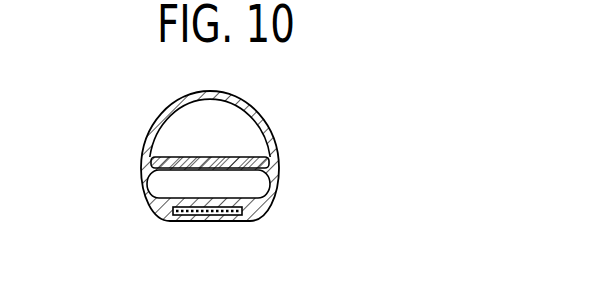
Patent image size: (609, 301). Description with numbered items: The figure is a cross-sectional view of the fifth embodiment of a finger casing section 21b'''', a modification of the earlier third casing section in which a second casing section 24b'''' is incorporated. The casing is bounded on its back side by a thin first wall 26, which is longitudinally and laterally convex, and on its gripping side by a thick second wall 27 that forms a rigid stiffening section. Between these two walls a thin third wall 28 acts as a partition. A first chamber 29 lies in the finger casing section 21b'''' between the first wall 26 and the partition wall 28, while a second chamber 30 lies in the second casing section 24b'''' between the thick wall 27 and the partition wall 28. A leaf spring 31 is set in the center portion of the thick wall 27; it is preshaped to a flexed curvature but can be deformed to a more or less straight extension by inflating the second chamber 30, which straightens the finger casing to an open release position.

The finger casing section 21b'''' is at (147, 129).
The second casing section 24b'''' is at (280, 187).
The first wall 26 is at (238, 105).
The second wall 27 is at (195, 216).
The third wall 28 is at (227, 160).
The first chamber 29 is at (182, 117).
The second chamber 30 is at (160, 188).
The leaf spring 31 is at (253, 219).